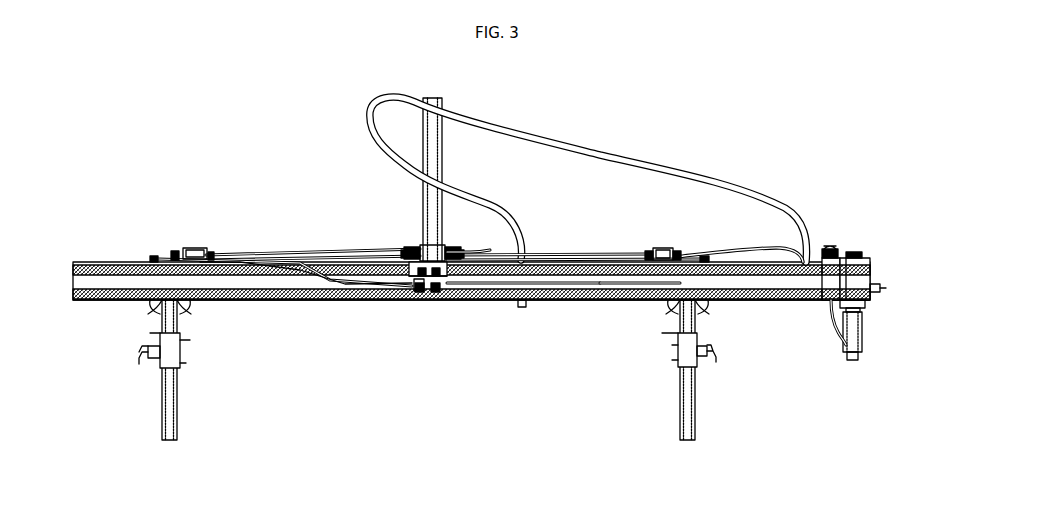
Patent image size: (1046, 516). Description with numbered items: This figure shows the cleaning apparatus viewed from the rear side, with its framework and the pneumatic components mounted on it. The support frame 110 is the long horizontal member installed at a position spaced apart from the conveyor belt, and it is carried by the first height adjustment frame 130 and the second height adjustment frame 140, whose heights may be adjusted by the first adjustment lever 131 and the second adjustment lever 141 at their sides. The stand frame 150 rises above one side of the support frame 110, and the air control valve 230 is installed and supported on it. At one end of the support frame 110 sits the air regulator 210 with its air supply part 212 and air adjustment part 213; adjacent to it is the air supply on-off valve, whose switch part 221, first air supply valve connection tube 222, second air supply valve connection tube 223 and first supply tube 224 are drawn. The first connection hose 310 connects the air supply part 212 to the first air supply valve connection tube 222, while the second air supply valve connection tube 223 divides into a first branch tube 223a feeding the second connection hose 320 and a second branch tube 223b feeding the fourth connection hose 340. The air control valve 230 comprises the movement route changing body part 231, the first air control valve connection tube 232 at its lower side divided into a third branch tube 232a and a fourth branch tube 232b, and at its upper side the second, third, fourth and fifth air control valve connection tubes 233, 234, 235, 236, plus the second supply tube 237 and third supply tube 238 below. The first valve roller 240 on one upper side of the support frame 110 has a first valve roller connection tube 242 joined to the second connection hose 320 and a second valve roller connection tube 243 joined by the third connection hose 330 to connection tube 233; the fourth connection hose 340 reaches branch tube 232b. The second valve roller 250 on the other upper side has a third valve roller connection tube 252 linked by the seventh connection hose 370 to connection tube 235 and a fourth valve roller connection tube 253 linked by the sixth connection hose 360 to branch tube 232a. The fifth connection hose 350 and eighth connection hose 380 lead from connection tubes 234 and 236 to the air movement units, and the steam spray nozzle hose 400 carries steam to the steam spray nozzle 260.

The support frame 110 is at (255, 300).
The first height adjustment frame 130 is at (177, 405).
The first adjustment lever 131 is at (142, 352).
The second height adjustment frame 140 is at (680, 405).
The second adjustment lever 141 is at (712, 357).
The stand frame 150 is at (444, 108).
The steam spray nozzle hose 400 is at (547, 148).
The eighth connection hose 380 is at (270, 255).
The seventh connection hose 370 is at (320, 257).
The sixth connection hose 360 is at (300, 300).
The fifth connection hose 350 is at (556, 255).
The third connection hose 330 is at (632, 252).
The second connection hose 320 is at (752, 250).
The steam spray nozzle 260 is at (528, 306).
The fourth connection hose 340 is at (628, 300).
The second valve roller 250 is at (181, 210).
The third valve roller connection tube 252 is at (197, 248).
The fourth valve roller connection tube 253 is at (204, 184).
The first valve roller 240 is at (653, 177).
The first valve roller connection tube 242 is at (661, 248).
The second valve roller connection tube 243 is at (648, 252).
The air control valve 230 is at (448, 291).
The movement route changing body part 231 is at (450, 290).
The first air control valve connection tube 232 is at (425, 347).
The third branch tube 232a is at (422, 295).
The fourth branch tube 232b is at (438, 292).
The second air control valve connection tube 233 is at (458, 250).
The third air control valve connection tube 234 is at (445, 243).
The fourth air control valve connection tube 235 is at (410, 256).
The fifth air control valve connection tube 236 is at (418, 247).
The second supply tube 237 is at (447, 293).
The third supply tube 238 is at (407, 293).
The second air supply valve connection tube 223 is at (801, 322).
The first branch tube 223a is at (746, 302).
The second branch tube 223b is at (812, 300).
The switch part 221 is at (829, 247).
The air adjustment part 213 is at (855, 252).
The first supply tube 224 is at (871, 284).
The first air supply valve connection tube 222 is at (862, 304).
The air supply part 212 is at (862, 330).
The air regulator 210 is at (852, 361).
The first connection hose 310 is at (836, 332).